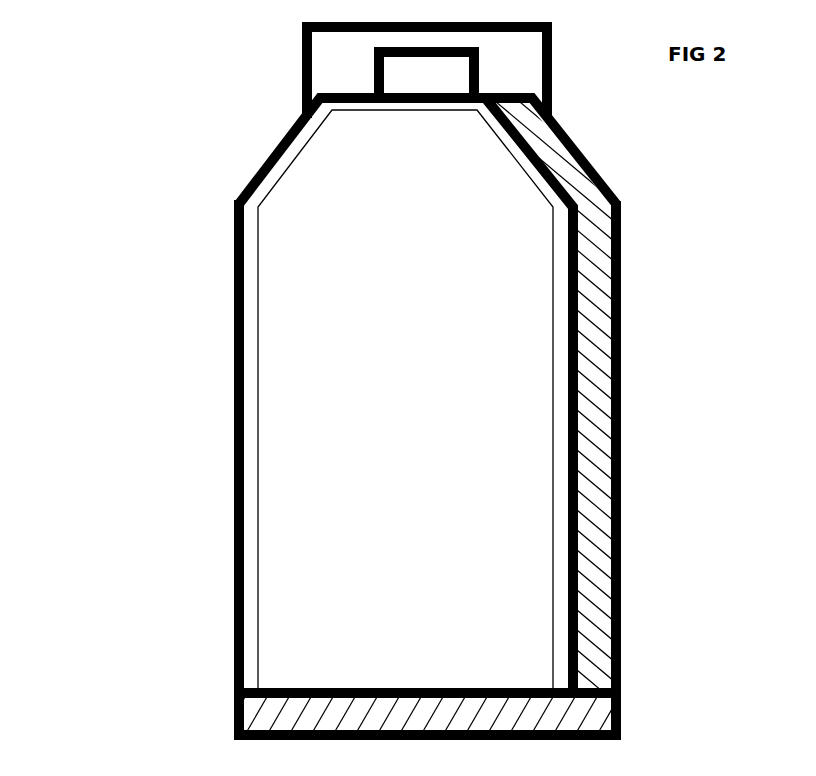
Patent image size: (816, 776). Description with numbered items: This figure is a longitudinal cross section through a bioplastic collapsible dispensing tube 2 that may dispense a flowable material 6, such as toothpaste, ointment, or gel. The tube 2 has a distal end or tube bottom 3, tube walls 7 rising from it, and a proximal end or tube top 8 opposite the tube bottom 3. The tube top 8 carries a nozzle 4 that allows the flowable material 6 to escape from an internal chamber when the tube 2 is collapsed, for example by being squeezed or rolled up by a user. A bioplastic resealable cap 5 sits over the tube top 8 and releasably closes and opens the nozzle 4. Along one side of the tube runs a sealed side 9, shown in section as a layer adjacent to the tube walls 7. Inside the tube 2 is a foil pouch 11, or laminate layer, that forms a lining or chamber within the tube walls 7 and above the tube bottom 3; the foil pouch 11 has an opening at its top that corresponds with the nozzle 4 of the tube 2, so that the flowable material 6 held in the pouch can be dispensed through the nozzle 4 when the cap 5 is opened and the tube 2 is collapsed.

The bioplastic collapsible dispensing tube 2 is at (205, 275).
The tube bottom 3 is at (287, 718).
The nozzle 4 is at (430, 77).
The bioplastic resealable cap 5 is at (553, 48).
The flowable material 6 is at (390, 403).
The tube walls 7 is at (235, 530).
The tube top 8 is at (287, 137).
The sealed side 9 is at (593, 370).
The foil pouch 11 is at (552, 271).